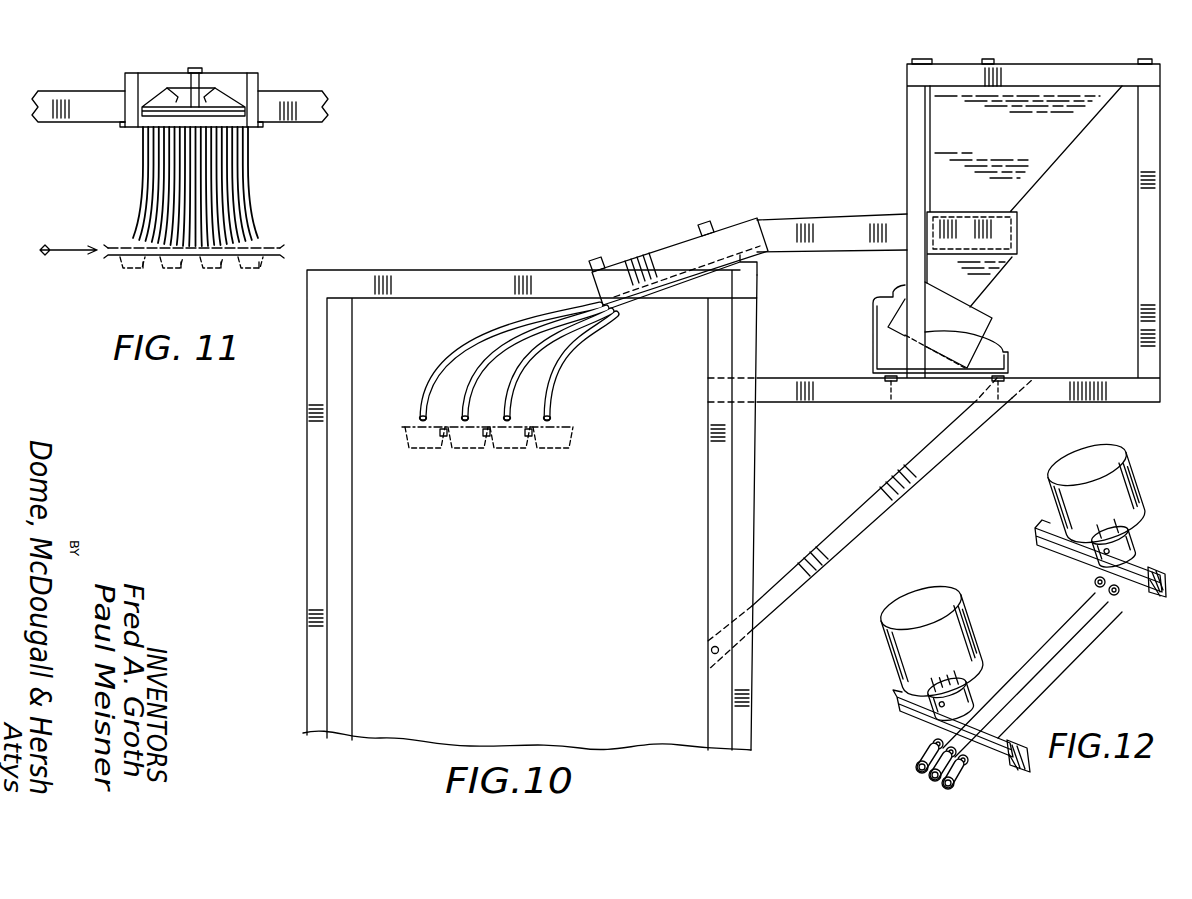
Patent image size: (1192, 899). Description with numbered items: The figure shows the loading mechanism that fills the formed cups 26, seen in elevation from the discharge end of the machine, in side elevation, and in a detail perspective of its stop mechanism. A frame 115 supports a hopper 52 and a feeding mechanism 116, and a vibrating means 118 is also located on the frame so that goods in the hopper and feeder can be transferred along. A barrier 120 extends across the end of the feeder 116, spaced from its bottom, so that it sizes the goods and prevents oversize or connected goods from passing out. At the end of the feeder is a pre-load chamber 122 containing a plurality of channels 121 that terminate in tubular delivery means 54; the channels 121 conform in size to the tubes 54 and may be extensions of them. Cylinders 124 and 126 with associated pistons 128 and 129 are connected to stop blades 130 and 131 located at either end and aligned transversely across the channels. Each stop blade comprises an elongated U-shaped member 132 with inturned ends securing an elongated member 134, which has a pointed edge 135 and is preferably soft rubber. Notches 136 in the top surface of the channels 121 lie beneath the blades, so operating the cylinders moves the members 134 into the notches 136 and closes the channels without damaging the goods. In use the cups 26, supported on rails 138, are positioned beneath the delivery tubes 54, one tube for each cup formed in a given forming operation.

In FIG. 10, the cups 26 is at (422, 450).
In FIG. 11, the cups 26 is at (205, 260).
In FIG. 10, the hopper 52 is at (1038, 176).
In FIG. 10, the tubular delivery means 54 is at (552, 358).
In FIG. 11, the tubular delivery means 54 is at (242, 177).
In FIG. 10, the frame 115 is at (1036, 394).
In FIG. 10, the feeding mechanism 116 is at (818, 222).
In FIG. 10, the vibrating means 118 is at (968, 320).
In FIG. 10, the barrier 120 is at (757, 238).
In FIG. 10, the channels 121 is at (667, 296).
In FIG. 12, the channels 121 is at (1062, 628).
In FIG. 10, the pre-load chamber 122 is at (650, 266).
In FIG. 10, the cylinder 124 is at (598, 258).
In FIG. 11, the cylinder 124 is at (194, 70).
In FIG. 12, the cylinder 124 is at (886, 640).
In FIG. 10, the cylinder 126 is at (706, 224).
In FIG. 12, the cylinder 126 is at (1143, 503).
In FIG. 11, the piston 128 is at (182, 97).
In FIG. 12, the piston 128 is at (965, 699).
In FIG. 12, the piston 129 is at (1128, 545).
In FIG. 11, the stop blade 130 is at (212, 100).
In FIG. 12, the stop blade 130 is at (915, 716).
In FIG. 12, the stop blade 131 is at (1060, 550).
In FIG. 12, the U-shaped member 132 is at (997, 768).
In FIG. 12, the elongated member 134 is at (1161, 594).
In FIG. 12, the pointed edge 135 is at (1022, 775).
In FIG. 12, the notches 136 is at (1093, 582).
In FIG. 10, the rails 138 is at (530, 437).
In FIG. 11, the rails 138 is at (262, 262).